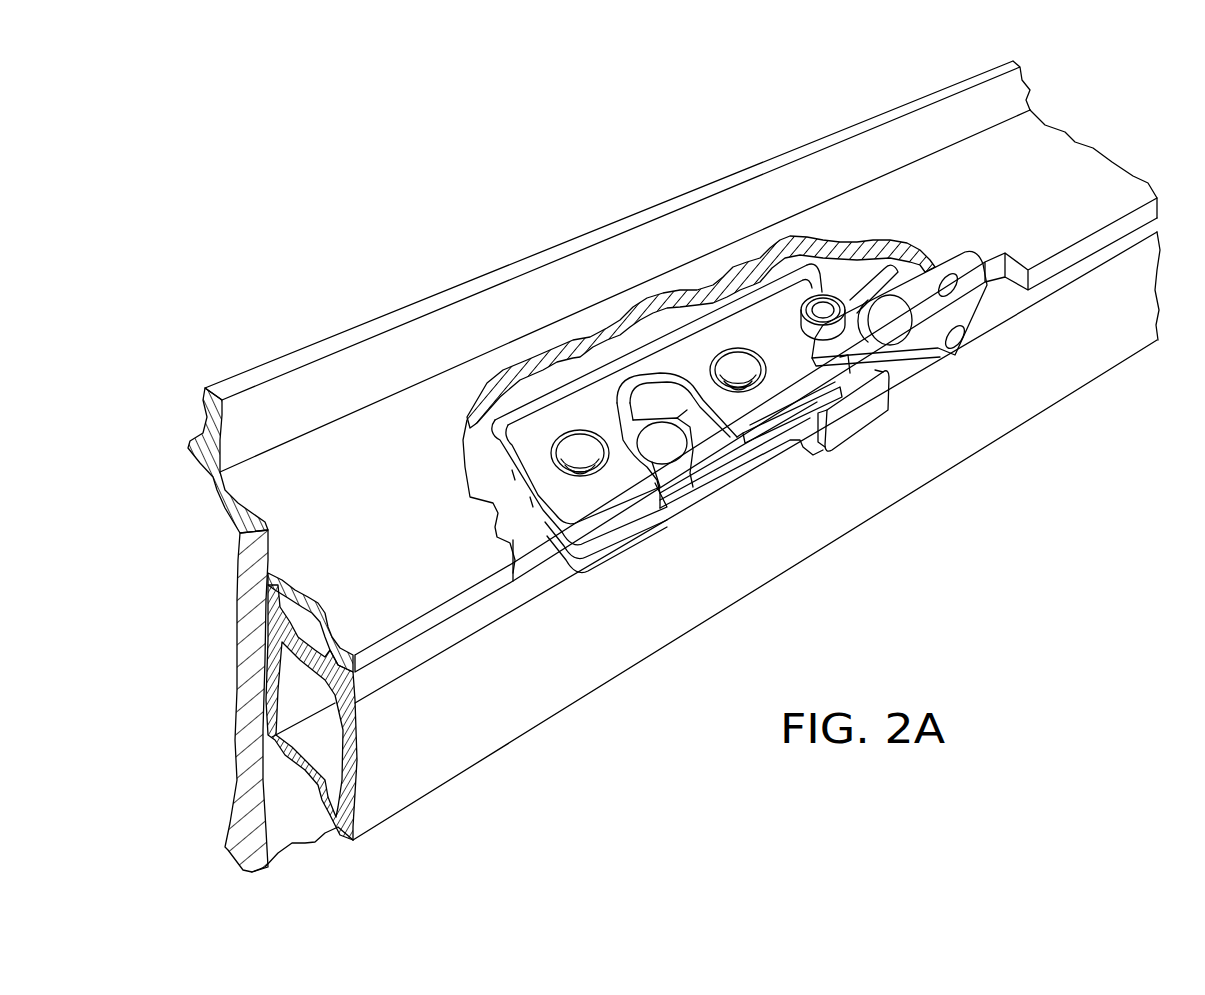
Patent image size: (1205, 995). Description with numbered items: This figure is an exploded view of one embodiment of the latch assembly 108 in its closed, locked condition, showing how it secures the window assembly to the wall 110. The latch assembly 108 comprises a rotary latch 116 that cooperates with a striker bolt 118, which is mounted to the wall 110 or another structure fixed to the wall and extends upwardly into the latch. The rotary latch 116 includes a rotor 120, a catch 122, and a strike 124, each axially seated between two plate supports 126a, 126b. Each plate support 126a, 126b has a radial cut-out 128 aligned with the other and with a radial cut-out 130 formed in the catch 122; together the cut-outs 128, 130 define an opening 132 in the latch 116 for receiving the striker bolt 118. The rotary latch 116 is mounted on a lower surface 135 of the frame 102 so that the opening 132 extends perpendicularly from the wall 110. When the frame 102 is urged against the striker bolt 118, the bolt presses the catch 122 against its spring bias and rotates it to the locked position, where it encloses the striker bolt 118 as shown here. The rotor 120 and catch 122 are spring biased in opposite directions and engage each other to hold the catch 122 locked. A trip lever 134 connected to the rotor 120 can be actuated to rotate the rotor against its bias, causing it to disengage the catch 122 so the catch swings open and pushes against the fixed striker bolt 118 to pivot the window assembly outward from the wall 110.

The frame 102 is at (313, 457).
The latch assembly 108 is at (706, 228).
The wall 110 is at (295, 826).
The rotary latch 116 is at (768, 322).
The striker bolt 118 is at (672, 503).
The rotor 120 is at (821, 294).
The catch 122 is at (752, 468).
The strike 124 is at (555, 440).
The plate support 126a is at (545, 503).
The plate support 126b is at (587, 570).
The radial cut-out 128 is at (617, 398).
The radial cut-out 130 is at (688, 435).
The opening 132 is at (657, 395).
The trip lever 134 is at (960, 252).
The lower surface 135 is at (227, 520).